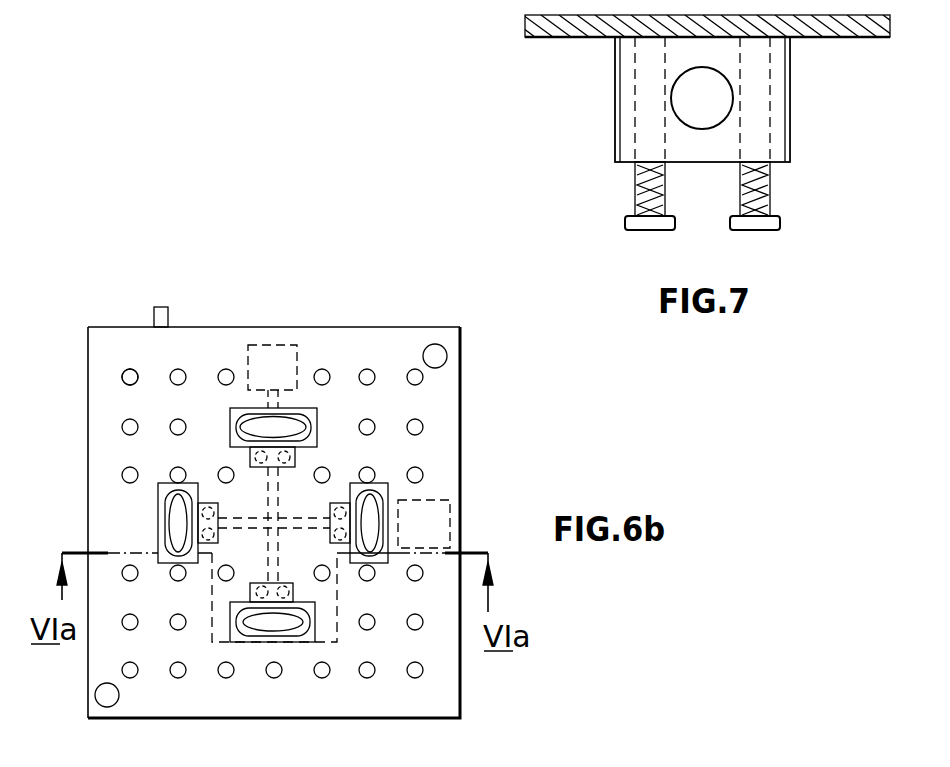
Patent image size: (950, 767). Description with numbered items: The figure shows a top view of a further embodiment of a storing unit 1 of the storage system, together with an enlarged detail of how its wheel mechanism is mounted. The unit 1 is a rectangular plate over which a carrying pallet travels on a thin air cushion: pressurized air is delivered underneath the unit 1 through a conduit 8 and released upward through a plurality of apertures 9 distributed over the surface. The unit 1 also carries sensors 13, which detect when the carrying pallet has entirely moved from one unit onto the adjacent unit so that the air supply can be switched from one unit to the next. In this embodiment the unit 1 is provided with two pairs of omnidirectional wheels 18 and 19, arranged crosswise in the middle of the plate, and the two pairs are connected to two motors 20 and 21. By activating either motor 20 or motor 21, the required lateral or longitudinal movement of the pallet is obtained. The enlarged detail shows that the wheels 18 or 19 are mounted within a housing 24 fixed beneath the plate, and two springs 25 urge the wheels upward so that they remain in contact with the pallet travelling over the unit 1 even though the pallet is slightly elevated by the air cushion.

In FIG. 6B, the unit 1 is at (436, 411).
In FIG. 6B, the conduit 8 is at (164, 307).
In FIG. 6B, the apertures 9 is at (130, 369).
In FIG. 6B, the sensors 13 is at (436, 345).
In FIG. 6B, the omnidirectional wheels 18 is at (178, 520).
In FIG. 6B, the omnidirectional wheels 19 is at (290, 427).
In FIG. 6B, the motor 20 is at (441, 511).
In FIG. 6B, the motor 21 is at (275, 343).
In FIG. 7, the housing 24 is at (778, 70).
In FIG. 7, the springs 25 is at (640, 190).